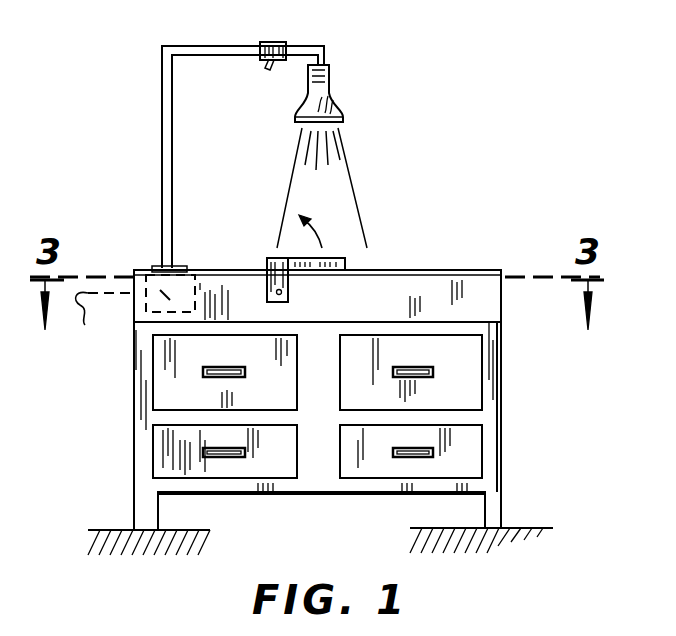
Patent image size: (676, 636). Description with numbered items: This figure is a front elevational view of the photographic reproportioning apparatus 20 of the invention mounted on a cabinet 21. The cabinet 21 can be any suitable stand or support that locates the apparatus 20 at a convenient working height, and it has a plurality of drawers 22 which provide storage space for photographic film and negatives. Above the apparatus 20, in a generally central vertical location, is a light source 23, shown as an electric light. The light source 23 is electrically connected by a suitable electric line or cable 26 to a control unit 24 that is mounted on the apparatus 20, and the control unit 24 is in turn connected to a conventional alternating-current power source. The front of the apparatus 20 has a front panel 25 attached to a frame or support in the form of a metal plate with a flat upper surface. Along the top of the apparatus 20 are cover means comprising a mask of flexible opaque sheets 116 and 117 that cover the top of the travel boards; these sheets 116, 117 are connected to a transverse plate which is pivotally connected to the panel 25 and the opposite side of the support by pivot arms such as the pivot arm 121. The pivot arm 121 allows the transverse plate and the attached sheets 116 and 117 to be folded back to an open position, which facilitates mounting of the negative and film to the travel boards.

The photographic reproportioning apparatus 20 is at (400, 196).
The cabinet 21 is at (345, 400).
The drawers 22 is at (277, 384).
The light source 23 is at (337, 95).
The control unit 24 is at (266, 42).
The front panel 25 is at (478, 302).
The electric line or cable 26 is at (162, 70).
The flexible opaque sheet 116 is at (222, 270).
The flexible opaque sheet 117 is at (447, 270).
The pivot arm 121 is at (343, 263).